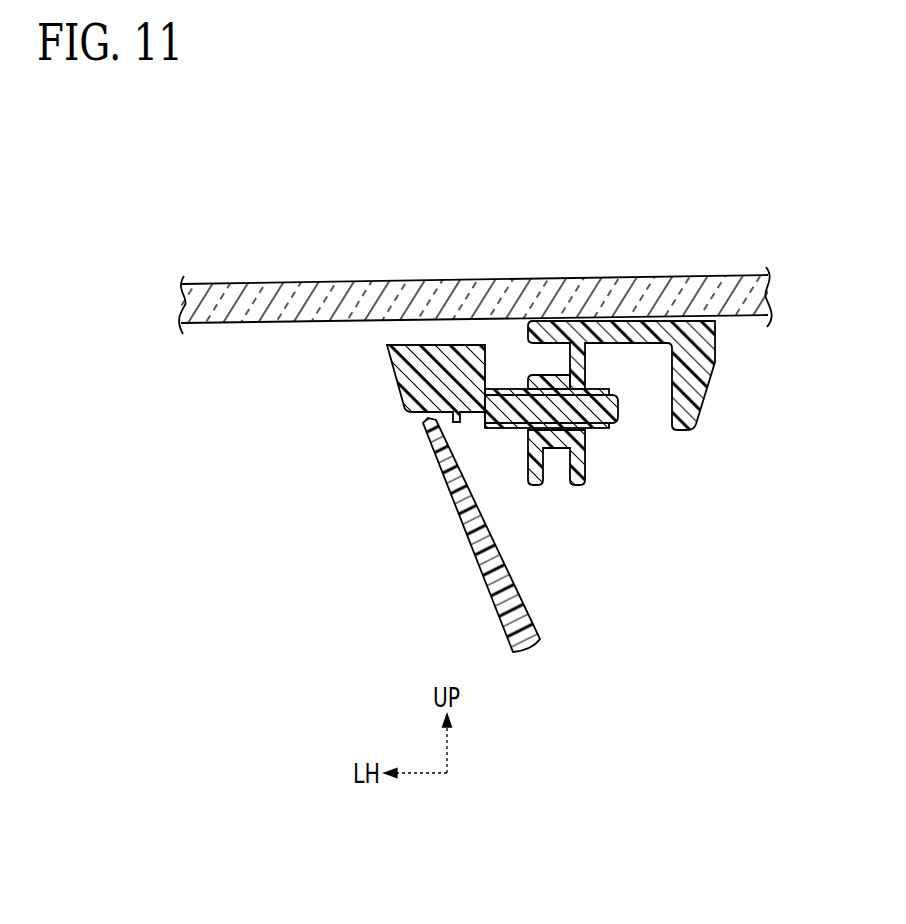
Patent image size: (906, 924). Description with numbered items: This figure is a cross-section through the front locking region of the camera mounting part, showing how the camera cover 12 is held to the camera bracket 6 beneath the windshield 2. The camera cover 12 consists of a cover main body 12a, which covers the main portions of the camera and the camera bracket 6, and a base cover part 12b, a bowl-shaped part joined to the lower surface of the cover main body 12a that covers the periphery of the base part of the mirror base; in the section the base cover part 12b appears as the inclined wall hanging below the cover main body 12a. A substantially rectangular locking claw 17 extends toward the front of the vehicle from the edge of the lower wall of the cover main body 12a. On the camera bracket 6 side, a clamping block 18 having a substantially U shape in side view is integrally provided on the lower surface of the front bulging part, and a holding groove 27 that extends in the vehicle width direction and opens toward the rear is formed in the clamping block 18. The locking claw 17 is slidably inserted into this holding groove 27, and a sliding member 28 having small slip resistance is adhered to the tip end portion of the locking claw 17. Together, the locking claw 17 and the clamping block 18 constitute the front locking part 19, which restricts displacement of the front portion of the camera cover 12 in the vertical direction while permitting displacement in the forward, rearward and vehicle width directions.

The windshield 2 is at (359, 283).
The camera bracket 6 is at (635, 380).
The camera cover 12 is at (435, 415).
The cover main body 12a is at (501, 375).
The base cover part 12b is at (442, 541).
The locking claw 17 is at (596, 412).
The clamping block 18 is at (550, 435).
The front locking part 19 is at (604, 378).
The holding groove 27 is at (557, 389).
The sliding member 28 is at (596, 428).